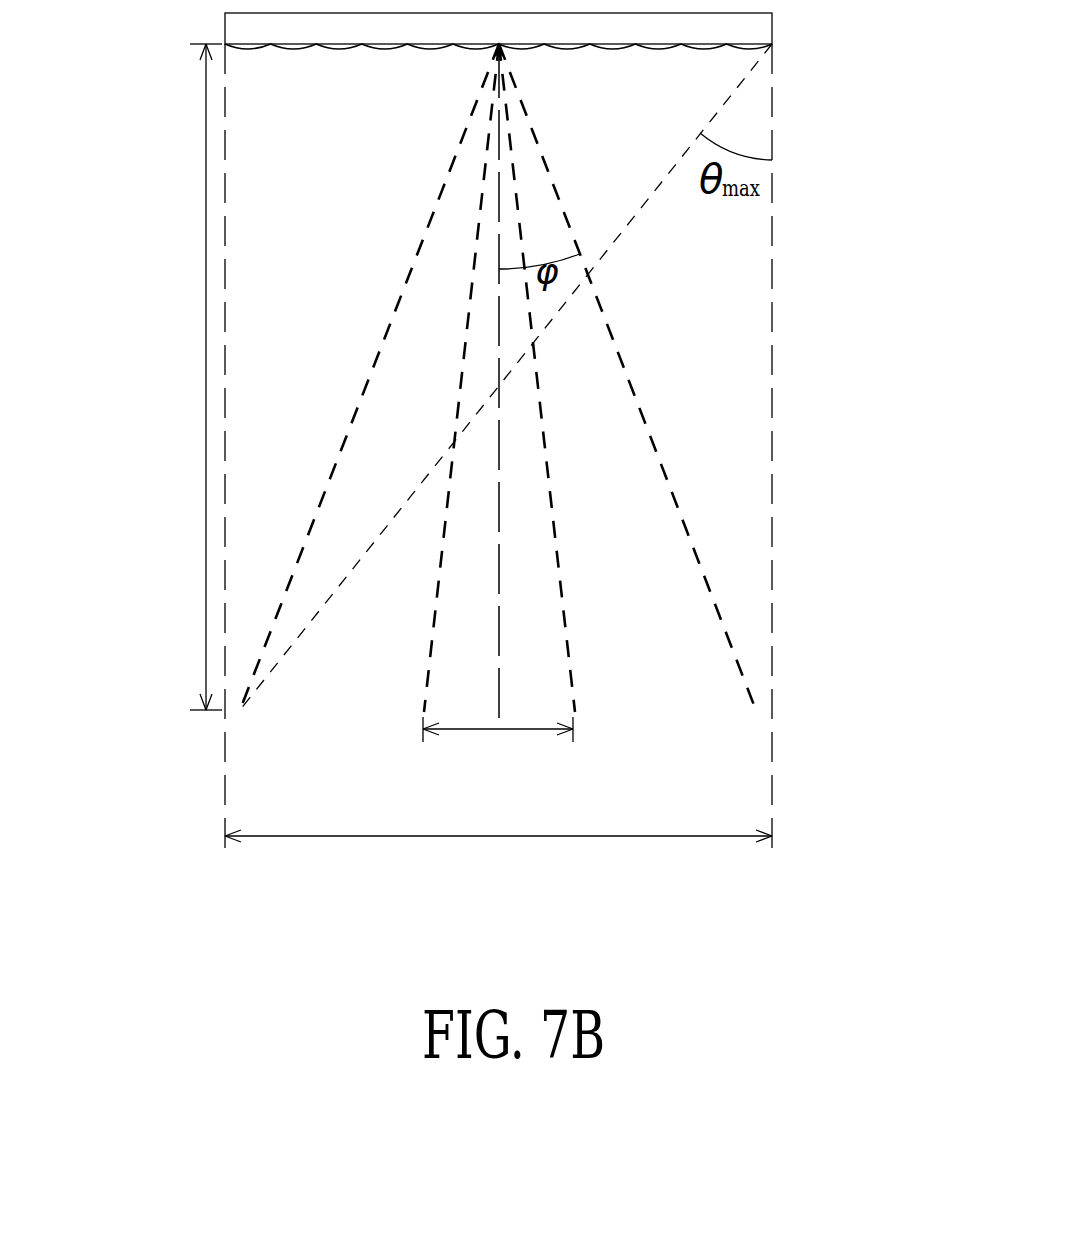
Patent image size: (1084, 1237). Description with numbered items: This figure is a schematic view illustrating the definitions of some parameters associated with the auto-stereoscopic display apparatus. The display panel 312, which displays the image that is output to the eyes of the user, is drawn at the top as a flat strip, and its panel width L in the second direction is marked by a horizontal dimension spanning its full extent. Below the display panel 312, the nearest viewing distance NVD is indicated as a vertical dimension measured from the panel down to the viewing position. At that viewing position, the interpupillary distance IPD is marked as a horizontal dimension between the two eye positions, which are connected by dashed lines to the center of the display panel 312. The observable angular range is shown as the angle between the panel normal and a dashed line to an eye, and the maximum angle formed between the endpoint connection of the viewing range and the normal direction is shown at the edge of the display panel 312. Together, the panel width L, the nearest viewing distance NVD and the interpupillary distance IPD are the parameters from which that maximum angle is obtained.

The display panel 312 is at (772, 29).
The nearest viewing distance NVD is at (177, 377).
The interpupillary distance IPD is at (498, 748).
The panel width L is at (498, 859).